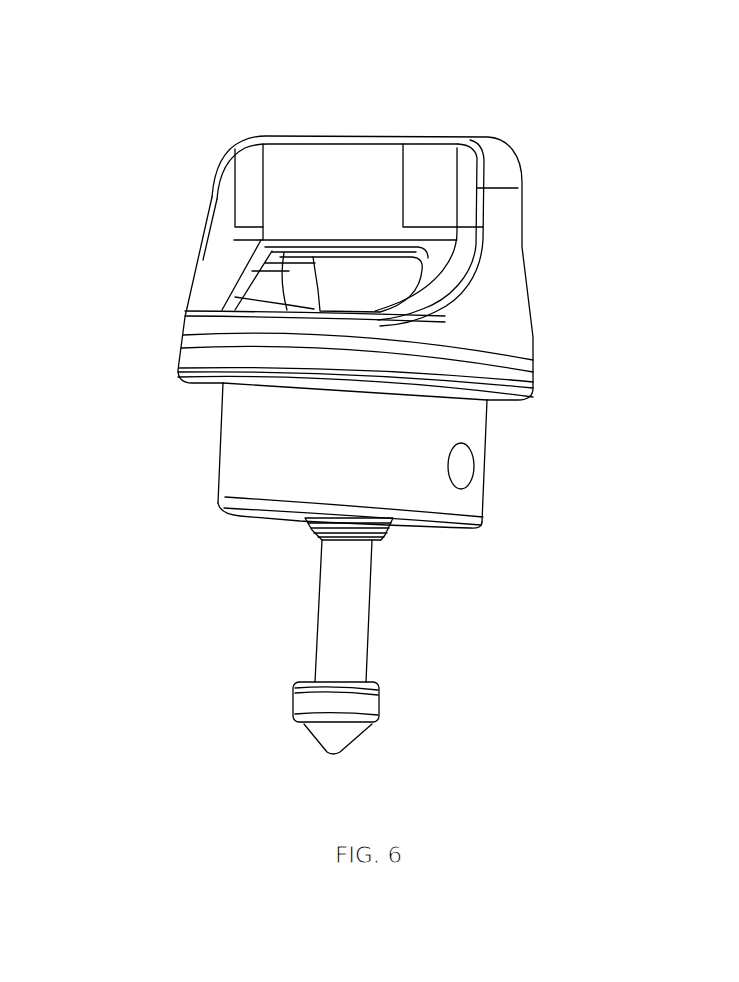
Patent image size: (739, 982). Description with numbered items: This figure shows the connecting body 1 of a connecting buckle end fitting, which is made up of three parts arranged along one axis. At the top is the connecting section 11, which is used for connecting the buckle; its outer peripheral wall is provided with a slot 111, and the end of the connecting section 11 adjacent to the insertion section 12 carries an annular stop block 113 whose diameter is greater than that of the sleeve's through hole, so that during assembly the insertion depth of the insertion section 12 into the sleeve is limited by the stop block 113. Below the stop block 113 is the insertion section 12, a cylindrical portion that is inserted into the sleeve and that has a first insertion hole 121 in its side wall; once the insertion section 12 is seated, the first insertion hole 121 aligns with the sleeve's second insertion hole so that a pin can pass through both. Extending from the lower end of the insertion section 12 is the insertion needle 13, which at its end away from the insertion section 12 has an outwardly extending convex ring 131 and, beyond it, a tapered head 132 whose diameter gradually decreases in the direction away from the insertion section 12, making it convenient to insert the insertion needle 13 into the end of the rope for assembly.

The connecting body 1 is at (578, 97).
The connecting section 11 is at (202, 271).
The slot 111 is at (397, 285).
The stop block 113 is at (185, 380).
The insertion section 12 is at (252, 450).
The first insertion hole 121 is at (463, 470).
The insertion needle 13 is at (330, 622).
The convex ring 131 is at (303, 702).
The tapered head 132 is at (348, 735).